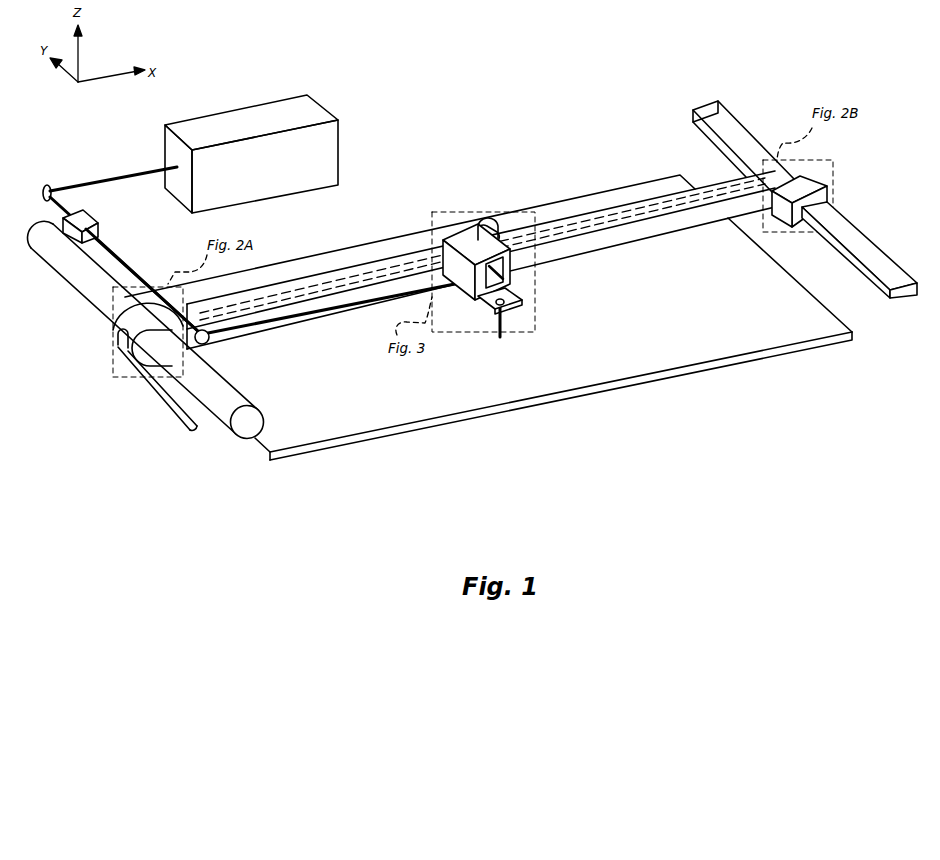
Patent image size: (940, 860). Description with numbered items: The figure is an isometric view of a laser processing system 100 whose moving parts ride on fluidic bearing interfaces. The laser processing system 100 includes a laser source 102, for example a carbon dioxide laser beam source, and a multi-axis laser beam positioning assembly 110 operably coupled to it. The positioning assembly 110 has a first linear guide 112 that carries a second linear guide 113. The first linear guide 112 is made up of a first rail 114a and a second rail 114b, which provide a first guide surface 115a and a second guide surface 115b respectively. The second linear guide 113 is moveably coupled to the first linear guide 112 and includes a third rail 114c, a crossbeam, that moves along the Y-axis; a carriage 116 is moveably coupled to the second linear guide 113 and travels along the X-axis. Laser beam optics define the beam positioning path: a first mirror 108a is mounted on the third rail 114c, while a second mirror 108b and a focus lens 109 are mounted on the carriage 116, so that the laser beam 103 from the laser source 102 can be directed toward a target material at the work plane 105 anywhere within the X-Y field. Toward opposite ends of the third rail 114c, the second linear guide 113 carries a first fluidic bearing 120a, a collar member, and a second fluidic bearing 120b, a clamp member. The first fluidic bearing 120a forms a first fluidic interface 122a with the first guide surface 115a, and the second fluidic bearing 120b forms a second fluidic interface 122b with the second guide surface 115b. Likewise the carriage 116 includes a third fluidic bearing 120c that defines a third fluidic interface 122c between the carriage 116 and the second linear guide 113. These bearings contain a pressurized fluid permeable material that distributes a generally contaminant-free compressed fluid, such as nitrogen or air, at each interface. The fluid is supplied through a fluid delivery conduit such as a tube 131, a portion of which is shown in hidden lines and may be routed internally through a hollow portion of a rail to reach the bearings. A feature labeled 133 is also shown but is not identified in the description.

The laser processing system 100 is at (445, 84).
The laser source 102 is at (322, 112).
The laser beam 103 is at (343, 307).
The work surface or work plane 105 is at (555, 378).
The first mirror 108a is at (210, 331).
The second mirror 108b is at (512, 282).
The focus lens 109 is at (520, 307).
The multi-axis laser beam positioning assembly 110 is at (743, 120).
The first linear guide 112 is at (243, 428).
The second linear guide 113 is at (637, 206).
The first rail 114a is at (240, 393).
The second rail 114b is at (887, 252).
The third rail 114c is at (657, 222).
The first guide surface 115a is at (88, 273).
The second guide surface 115b is at (863, 237).
The carriage 116 is at (474, 224).
The first fluidic bearing 120a is at (125, 325).
The second fluidic bearing 120b is at (807, 187).
The third fluidic bearing 120c is at (460, 229).
The first fluidic interface 122a is at (182, 350).
The second fluidic interface 122b is at (835, 206).
The third fluidic interface 122c is at (450, 262).
The tube 131 is at (178, 423).
The rail channel 133 is at (327, 288).